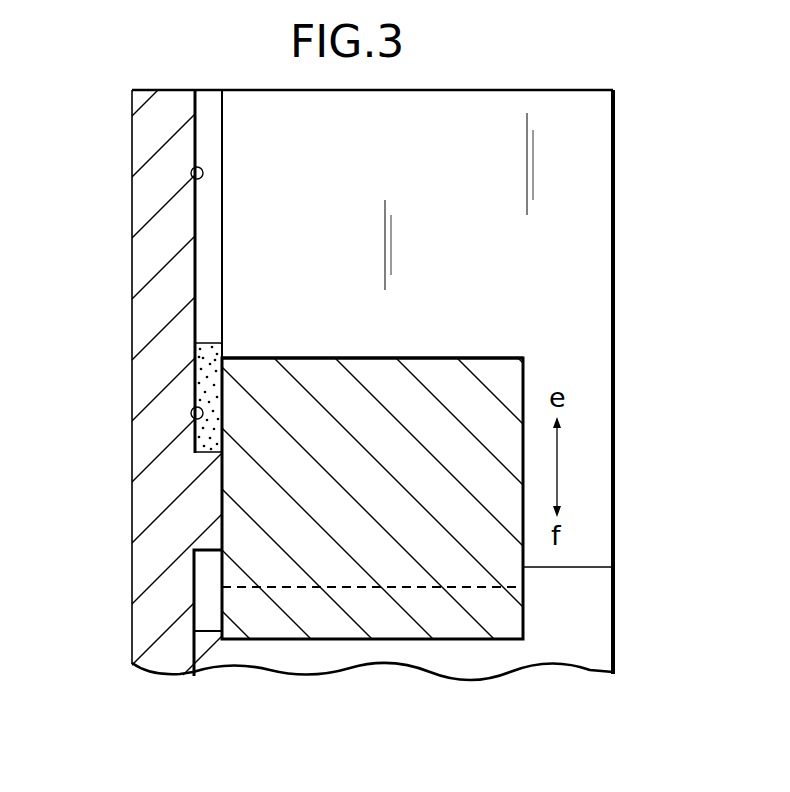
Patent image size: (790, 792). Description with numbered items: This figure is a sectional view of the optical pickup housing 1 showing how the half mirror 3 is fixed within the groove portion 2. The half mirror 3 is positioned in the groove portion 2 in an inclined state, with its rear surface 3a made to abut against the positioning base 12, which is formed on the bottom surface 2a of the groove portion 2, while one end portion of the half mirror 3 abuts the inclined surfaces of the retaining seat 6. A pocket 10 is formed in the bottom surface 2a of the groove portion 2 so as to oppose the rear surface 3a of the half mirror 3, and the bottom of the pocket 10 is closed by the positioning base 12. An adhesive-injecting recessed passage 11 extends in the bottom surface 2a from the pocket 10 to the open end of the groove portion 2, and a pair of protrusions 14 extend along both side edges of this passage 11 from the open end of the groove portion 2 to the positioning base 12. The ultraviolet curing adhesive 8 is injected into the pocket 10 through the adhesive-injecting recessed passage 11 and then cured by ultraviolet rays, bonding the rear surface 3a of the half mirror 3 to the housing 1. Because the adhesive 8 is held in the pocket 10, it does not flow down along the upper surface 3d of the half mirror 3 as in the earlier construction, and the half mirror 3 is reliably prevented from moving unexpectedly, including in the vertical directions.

The housing 1 is at (143, 158).
The adhesive-injecting recessed passage 11 is at (193, 183).
The protrusions 14 is at (223, 128).
The bottom surface of groove portion 2a is at (200, 215).
The groove portion 2 is at (573, 160).
The ultraviolet curing adhesive 8 is at (204, 352).
The half mirror 3 is at (434, 356).
The upper surface of half mirror 3d is at (349, 357).
The pocket 10 is at (196, 422).
The positioning base 12 is at (203, 481).
The rear surface of half mirror 3a is at (220, 495).
The retaining seat 6 is at (620, 617).